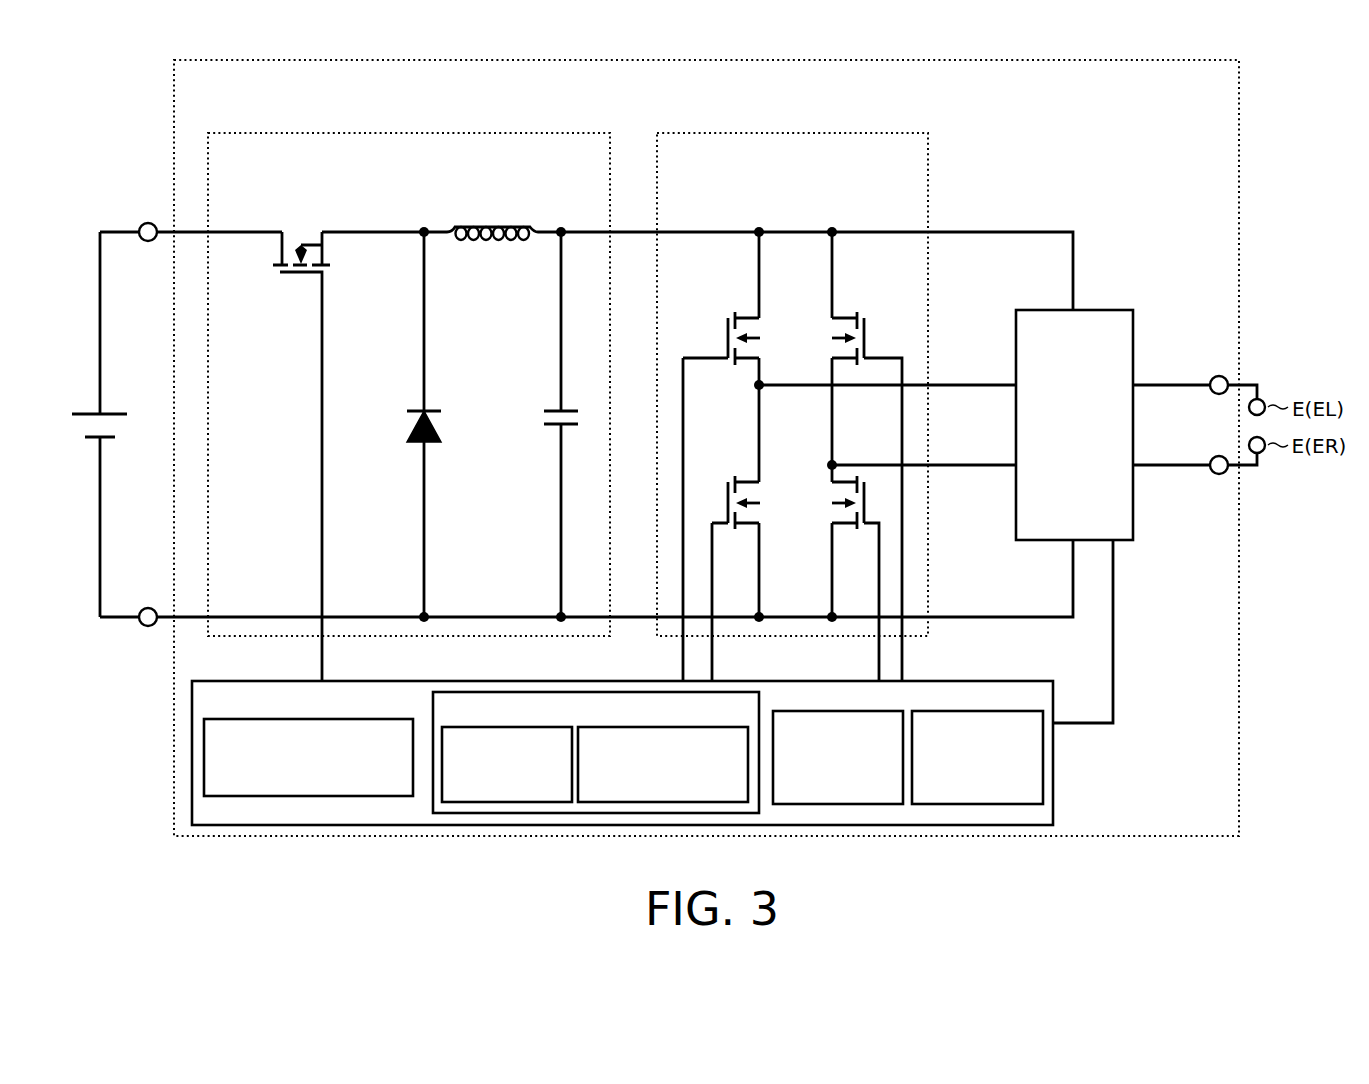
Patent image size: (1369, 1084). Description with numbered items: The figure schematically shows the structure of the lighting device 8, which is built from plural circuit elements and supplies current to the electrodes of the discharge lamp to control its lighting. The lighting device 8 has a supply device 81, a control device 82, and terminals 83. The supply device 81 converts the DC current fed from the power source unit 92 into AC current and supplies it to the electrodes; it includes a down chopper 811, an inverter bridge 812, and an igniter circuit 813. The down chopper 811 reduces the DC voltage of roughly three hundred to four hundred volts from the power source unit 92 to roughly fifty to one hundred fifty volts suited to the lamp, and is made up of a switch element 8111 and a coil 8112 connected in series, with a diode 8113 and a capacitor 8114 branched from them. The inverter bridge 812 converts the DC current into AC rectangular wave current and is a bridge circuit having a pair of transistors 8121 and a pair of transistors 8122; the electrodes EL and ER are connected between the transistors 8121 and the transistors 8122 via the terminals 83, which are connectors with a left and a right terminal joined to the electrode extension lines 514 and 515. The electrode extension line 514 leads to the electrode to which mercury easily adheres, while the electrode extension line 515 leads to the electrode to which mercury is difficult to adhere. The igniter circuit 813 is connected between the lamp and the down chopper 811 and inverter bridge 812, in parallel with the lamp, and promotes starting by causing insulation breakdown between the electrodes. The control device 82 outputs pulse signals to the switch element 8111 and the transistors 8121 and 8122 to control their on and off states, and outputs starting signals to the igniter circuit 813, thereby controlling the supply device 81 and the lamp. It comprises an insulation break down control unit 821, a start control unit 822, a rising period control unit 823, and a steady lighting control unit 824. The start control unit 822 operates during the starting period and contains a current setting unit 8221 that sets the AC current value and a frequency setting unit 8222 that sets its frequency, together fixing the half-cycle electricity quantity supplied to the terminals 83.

The lighting device 8 is at (1240, 126).
The supply device 81 is at (1108, 128).
The down chopper 811 is at (538, 133).
The switch element 8111 is at (320, 216).
The coil 8112 is at (500, 216).
The diode 8113 is at (410, 400).
The capacitor 8114 is at (548, 400).
The inverter bridge 812 is at (862, 132).
The transistors 8121 is at (726, 305).
The transistors 8122 is at (866, 305).
The igniter circuit 813 is at (1105, 309).
The control device 82 is at (1056, 766).
The insulation break down control unit 821 is at (340, 712).
The start control unit 822 is at (603, 691).
The current setting unit 8221 is at (512, 803).
The frequency setting unit 8222 is at (663, 803).
The rising period control unit 823 is at (838, 703).
The steady lighting control unit 824 is at (975, 703).
The terminals 83 is at (1212, 378).
The electrode extension line 514 is at (1248, 385).
The electrode extension line 515 is at (1248, 467).
The power source unit 92 is at (83, 400).